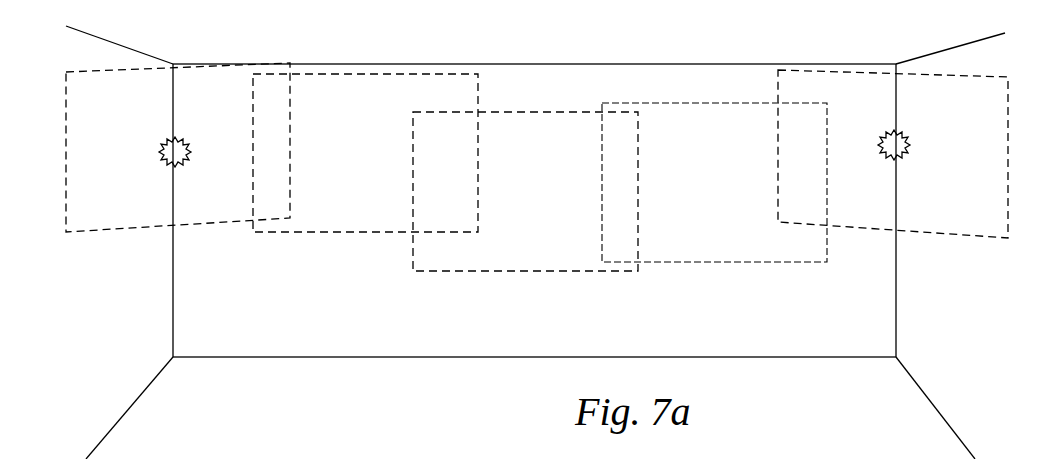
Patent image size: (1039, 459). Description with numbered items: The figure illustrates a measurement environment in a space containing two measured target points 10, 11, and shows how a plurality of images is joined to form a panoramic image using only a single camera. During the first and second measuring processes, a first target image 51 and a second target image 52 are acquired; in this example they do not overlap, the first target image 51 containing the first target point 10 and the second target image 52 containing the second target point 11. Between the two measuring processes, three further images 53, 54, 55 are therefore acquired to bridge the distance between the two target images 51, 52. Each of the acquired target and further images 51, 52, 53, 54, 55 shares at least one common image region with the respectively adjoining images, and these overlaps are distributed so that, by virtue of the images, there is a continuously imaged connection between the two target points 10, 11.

The target point 10 is at (235, 94).
The target point 11 is at (851, 92).
The first target image 51 is at (170, 185).
The second target image 52 is at (893, 189).
The further image 53 is at (358, 191).
The further image 54 is at (525, 229).
The further image 55 is at (714, 221).